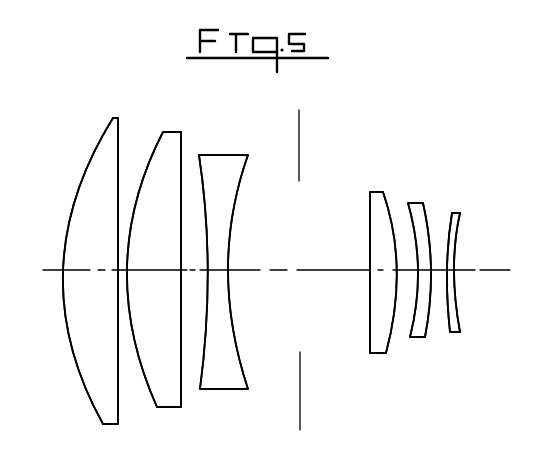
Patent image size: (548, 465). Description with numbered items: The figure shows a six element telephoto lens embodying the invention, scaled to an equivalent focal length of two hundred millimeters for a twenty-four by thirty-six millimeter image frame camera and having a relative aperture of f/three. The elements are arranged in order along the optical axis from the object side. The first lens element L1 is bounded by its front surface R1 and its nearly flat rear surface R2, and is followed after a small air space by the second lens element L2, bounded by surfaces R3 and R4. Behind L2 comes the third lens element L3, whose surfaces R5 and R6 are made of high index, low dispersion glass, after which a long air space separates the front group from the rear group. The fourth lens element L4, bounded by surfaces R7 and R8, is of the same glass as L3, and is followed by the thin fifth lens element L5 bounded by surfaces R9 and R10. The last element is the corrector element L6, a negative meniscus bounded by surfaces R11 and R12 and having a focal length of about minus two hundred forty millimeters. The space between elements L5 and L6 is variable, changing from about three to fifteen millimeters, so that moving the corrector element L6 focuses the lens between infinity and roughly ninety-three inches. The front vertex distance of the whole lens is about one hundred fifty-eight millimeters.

The first lens element L1 is at (110, 135).
The second lens element L2 is at (168, 150).
The third lens element L3 is at (232, 163).
The fourth lens element L4 is at (374, 192).
The fifth lens element L5 is at (417, 205).
The corrector element L6 is at (457, 215).
The front surface of L1 R1 is at (78, 360).
The rear surface of L1 R2 is at (119, 400).
The front surface of L2 R3 is at (128, 315).
The rear surface of L2 R4 is at (182, 377).
The front surface of L3 R5 is at (210, 282).
The rear surface of L3 R6 is at (232, 310).
The front surface of L4 R7 is at (370, 300).
The rear surface of L4 R8 is at (384, 350).
The front surface of L5 R9 is at (410, 334).
The rear surface of L5 R10 is at (426, 334).
The front surface of L6 R11 is at (448, 233).
The rear surface of L6 R12 is at (455, 262).